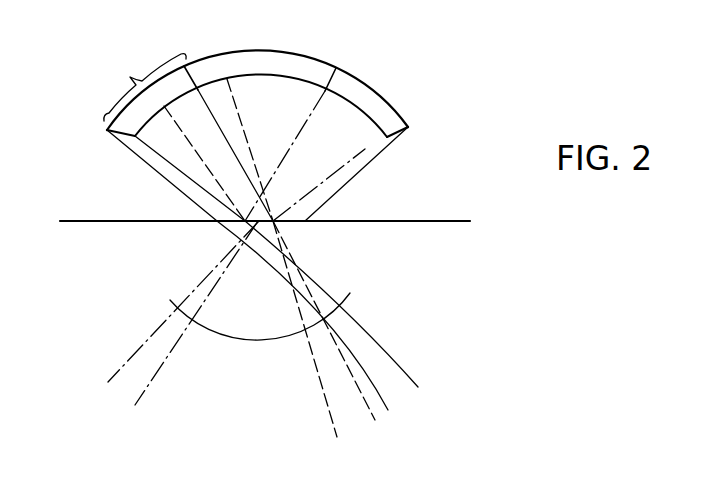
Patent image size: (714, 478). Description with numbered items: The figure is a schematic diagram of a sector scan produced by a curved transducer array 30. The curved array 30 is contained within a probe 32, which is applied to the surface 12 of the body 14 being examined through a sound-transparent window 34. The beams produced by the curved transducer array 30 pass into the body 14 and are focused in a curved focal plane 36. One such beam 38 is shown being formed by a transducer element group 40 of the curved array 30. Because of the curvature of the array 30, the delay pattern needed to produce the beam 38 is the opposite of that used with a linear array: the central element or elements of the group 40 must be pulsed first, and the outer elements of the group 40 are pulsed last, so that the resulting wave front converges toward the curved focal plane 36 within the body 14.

The surface 12 is at (424, 223).
The body 14 is at (475, 326).
The curved transducer array 30 is at (396, 70).
The probe 32 is at (361, 155).
The sound-transparent window 34 is at (188, 223).
The curved focal plane 36 is at (285, 338).
The beam 38 is at (318, 298).
The element group 40 is at (135, 87).